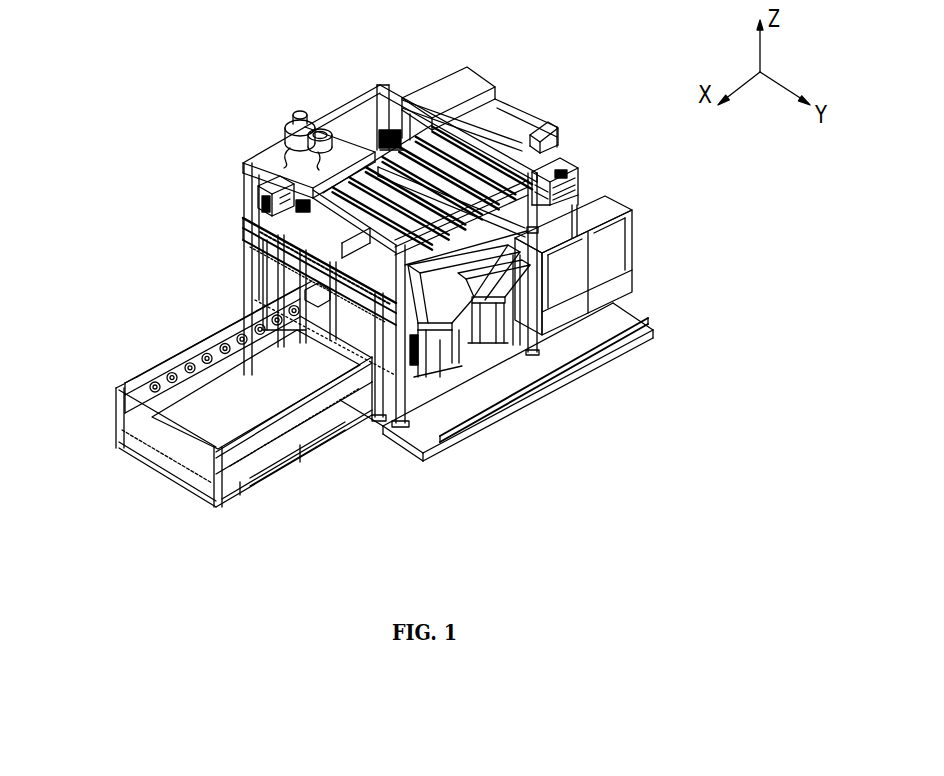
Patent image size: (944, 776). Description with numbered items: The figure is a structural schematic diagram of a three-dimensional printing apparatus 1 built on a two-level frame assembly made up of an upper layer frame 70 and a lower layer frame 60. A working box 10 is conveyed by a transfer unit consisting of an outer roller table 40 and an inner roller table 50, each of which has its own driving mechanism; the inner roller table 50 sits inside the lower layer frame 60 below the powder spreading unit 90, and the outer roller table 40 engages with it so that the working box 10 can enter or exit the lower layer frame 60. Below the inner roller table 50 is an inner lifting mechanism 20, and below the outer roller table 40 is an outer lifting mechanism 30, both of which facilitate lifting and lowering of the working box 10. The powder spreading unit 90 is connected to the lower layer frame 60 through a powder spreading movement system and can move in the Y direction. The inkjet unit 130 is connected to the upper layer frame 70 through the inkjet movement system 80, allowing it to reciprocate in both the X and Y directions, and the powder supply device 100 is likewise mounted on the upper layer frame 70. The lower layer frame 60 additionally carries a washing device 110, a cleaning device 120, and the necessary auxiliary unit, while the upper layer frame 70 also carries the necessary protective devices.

The 3D printing apparatus 1 is at (198, 125).
The working box 10 is at (318, 282).
The inner lifting mechanism 20 is at (463, 360).
The outer lifting mechanism 30 is at (250, 443).
The outer roller table 40 is at (168, 358).
The inner roller table 50 is at (600, 365).
The lower layer frame 60 is at (250, 263).
The upper layer frame 70 is at (368, 92).
The inkjet movement system 80 is at (512, 110).
The powder spreading unit 90 is at (388, 117).
The powder supply device 100 is at (290, 115).
The washing device 110 is at (577, 185).
The cleaning device 120 is at (243, 225).
The inkjet unit 130 is at (265, 210).